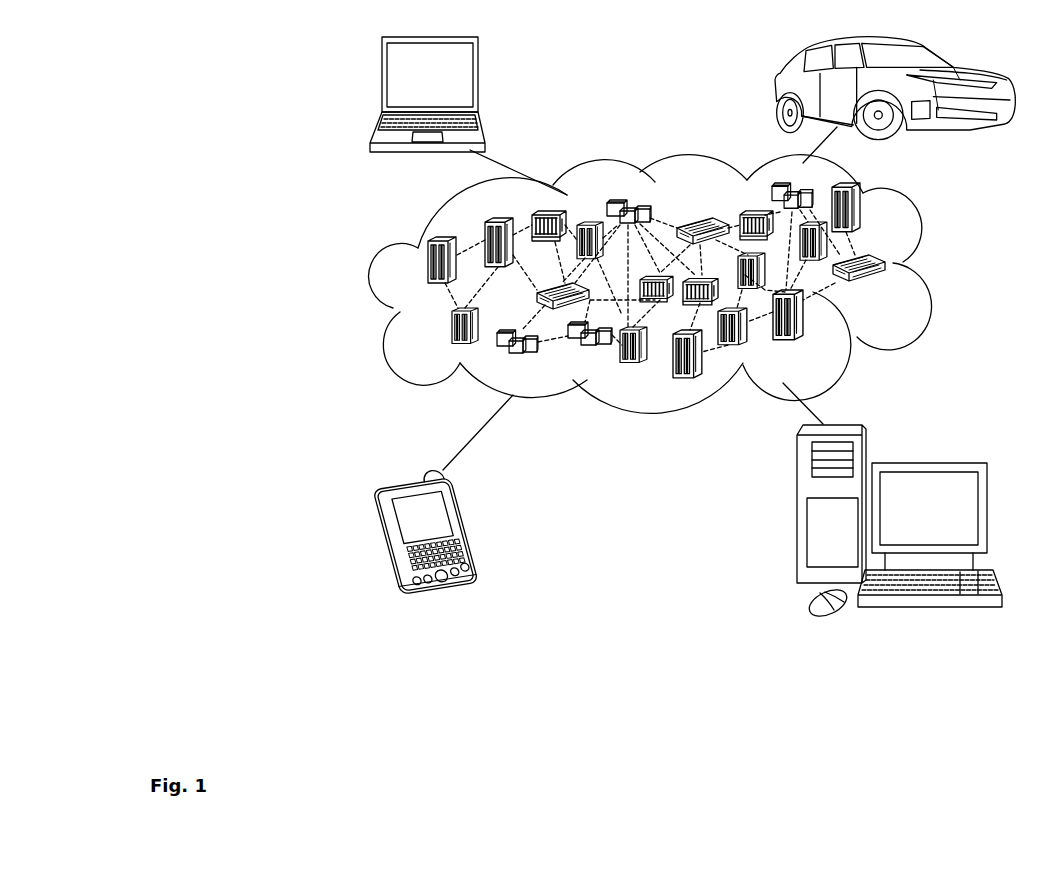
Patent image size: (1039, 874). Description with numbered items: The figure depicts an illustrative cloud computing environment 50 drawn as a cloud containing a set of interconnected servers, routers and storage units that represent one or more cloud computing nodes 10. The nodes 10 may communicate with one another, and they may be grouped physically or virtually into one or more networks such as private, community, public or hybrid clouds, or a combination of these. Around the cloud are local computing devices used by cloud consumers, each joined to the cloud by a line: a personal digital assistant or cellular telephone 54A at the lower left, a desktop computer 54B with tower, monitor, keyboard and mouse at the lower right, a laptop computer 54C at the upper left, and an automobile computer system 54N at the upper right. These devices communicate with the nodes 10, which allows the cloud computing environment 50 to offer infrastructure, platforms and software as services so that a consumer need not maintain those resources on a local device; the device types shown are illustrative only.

The cloud computing nodes 10 is at (889, 290).
The cloud computing environment 50 is at (927, 264).
The personal digital assistant (PDA) or cellular telephone 54A is at (470, 529).
The desktop computer 54B is at (927, 463).
The laptop computer 54C is at (478, 80).
The automobile computer system 54N is at (776, 93).